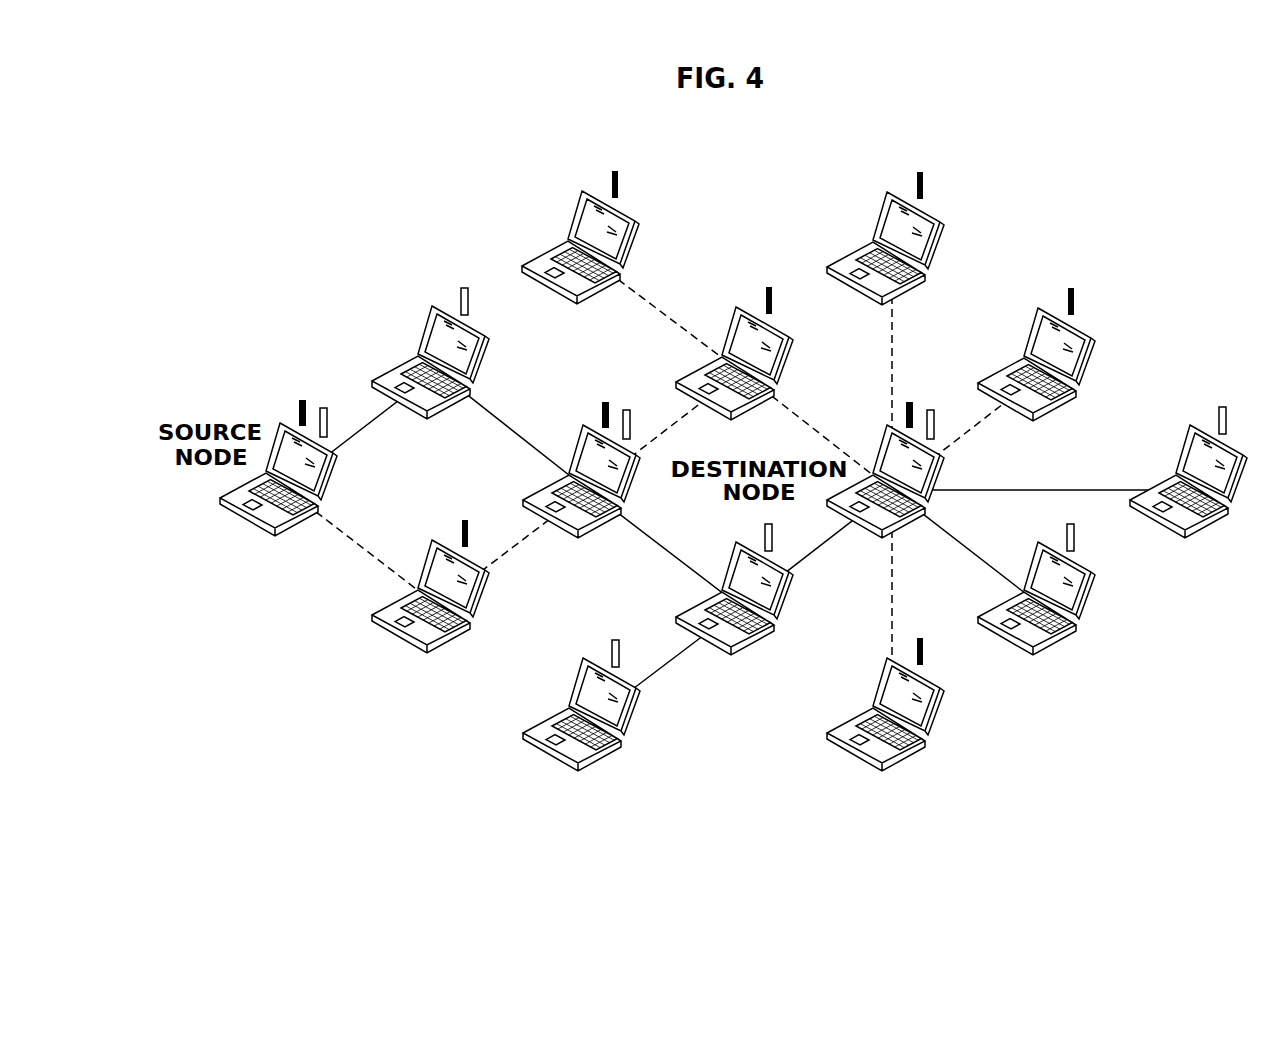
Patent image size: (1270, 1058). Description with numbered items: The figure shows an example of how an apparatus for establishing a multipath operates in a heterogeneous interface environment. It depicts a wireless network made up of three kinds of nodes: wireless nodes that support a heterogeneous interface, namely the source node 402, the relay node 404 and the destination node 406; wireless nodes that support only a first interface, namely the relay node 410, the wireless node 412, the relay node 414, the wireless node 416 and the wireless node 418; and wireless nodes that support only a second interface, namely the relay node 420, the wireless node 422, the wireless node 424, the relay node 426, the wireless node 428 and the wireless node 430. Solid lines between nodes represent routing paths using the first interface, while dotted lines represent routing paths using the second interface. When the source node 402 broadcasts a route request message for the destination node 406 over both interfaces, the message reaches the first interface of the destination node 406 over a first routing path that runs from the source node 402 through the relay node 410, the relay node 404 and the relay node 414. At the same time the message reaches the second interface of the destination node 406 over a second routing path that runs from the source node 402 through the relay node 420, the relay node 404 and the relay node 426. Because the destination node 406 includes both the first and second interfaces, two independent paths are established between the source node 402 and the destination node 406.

The source node 402 is at (245, 525).
The relay node 404 is at (548, 527).
The destination node 406 is at (852, 527).
The relay node 410 is at (397, 408).
The wireless node 412 is at (548, 760).
The relay node 414 is at (701, 644).
The wireless node 416 is at (1003, 644).
The wireless node 418 is at (1155, 527).
The relay node 420 is at (397, 642).
The wireless node 422 is at (852, 760).
The wireless node 424 is at (547, 293).
The relay node 426 is at (742, 310).
The wireless node 428 is at (852, 294).
The wireless node 430 is at (1003, 410).